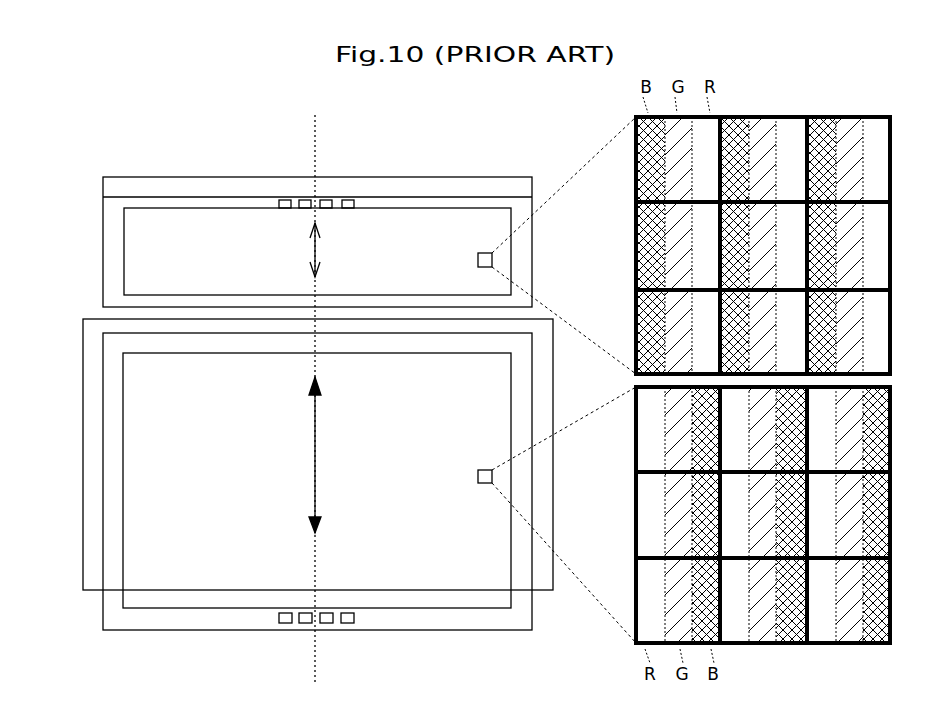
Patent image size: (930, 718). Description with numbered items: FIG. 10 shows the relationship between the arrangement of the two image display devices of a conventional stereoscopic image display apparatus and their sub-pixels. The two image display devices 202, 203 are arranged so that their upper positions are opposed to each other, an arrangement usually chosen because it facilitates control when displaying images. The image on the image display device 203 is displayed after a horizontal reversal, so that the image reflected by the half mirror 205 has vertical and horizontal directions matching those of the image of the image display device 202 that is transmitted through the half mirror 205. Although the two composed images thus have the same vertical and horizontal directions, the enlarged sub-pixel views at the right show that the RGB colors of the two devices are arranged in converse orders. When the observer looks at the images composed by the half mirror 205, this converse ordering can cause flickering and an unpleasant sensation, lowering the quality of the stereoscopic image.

The image display device 202 is at (178, 631).
The image display device 203 is at (185, 183).
The half mirror 205 is at (82, 325).